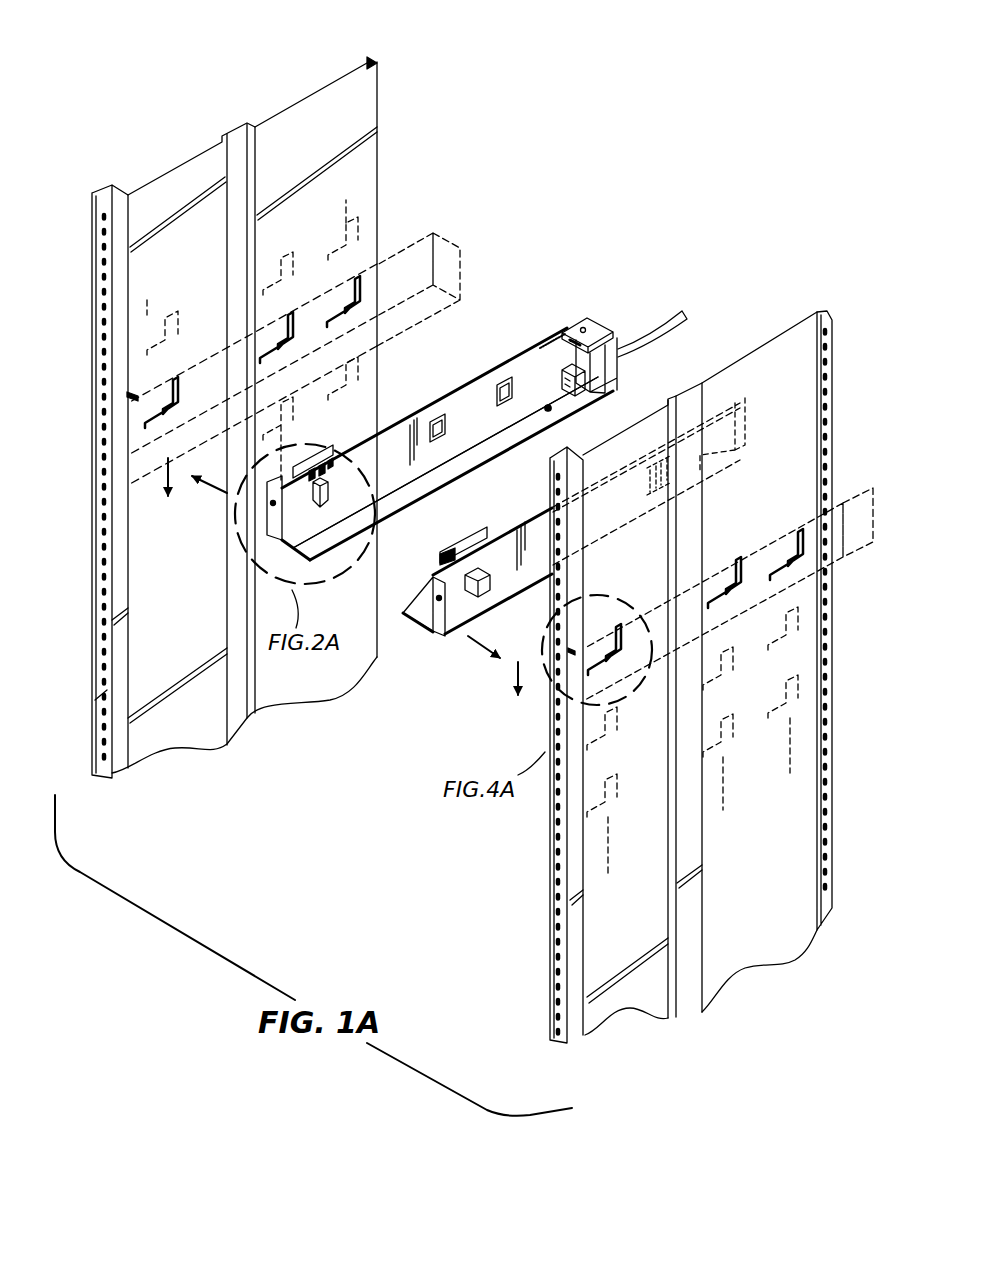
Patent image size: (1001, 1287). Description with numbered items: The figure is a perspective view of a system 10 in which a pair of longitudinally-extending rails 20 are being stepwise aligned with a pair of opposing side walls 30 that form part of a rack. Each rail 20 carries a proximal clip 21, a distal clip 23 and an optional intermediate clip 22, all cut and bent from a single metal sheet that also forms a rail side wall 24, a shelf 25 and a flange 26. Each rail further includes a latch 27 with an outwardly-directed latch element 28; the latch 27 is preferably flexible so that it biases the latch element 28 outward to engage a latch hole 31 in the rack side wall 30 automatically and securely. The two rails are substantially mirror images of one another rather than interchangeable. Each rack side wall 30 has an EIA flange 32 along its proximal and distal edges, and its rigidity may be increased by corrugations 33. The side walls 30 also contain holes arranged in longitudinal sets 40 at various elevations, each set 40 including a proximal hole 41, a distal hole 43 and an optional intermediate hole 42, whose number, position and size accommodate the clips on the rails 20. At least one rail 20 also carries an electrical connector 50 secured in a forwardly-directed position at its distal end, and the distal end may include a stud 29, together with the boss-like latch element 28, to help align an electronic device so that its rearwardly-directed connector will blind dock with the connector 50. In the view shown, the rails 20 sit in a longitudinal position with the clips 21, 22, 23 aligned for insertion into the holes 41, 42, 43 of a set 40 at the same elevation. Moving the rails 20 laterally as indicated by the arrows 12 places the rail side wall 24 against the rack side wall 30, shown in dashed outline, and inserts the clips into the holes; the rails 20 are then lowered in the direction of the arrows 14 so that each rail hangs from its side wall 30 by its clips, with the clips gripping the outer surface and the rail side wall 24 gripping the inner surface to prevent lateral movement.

The system 10 is at (612, 182).
The arrows 12 is at (212, 500).
The arrows 14 is at (172, 462).
The longitudinally-extending rail 20 is at (516, 332).
The proximal clip 21 is at (332, 480).
The intermediate clip 22 is at (436, 418).
The distal clip 23 is at (501, 378).
The rail side wall 24 is at (378, 452).
The shelf 25 is at (452, 462).
The flange 26 is at (270, 525).
The latch 27 is at (300, 465).
The latch element 28 is at (572, 334).
The stud 29 is at (552, 406).
The rack side wall 30 is at (302, 95).
The latch hole 31 is at (131, 392).
The EIA flange 32 is at (373, 57).
The corrugation 33 is at (243, 126).
The longitudinal set of holes 40 is at (392, 278).
The proximal hole 41 is at (162, 384).
The intermediate hole 42 is at (283, 325).
The distal hole 43 is at (350, 292).
The electrical connector 50 is at (622, 328).